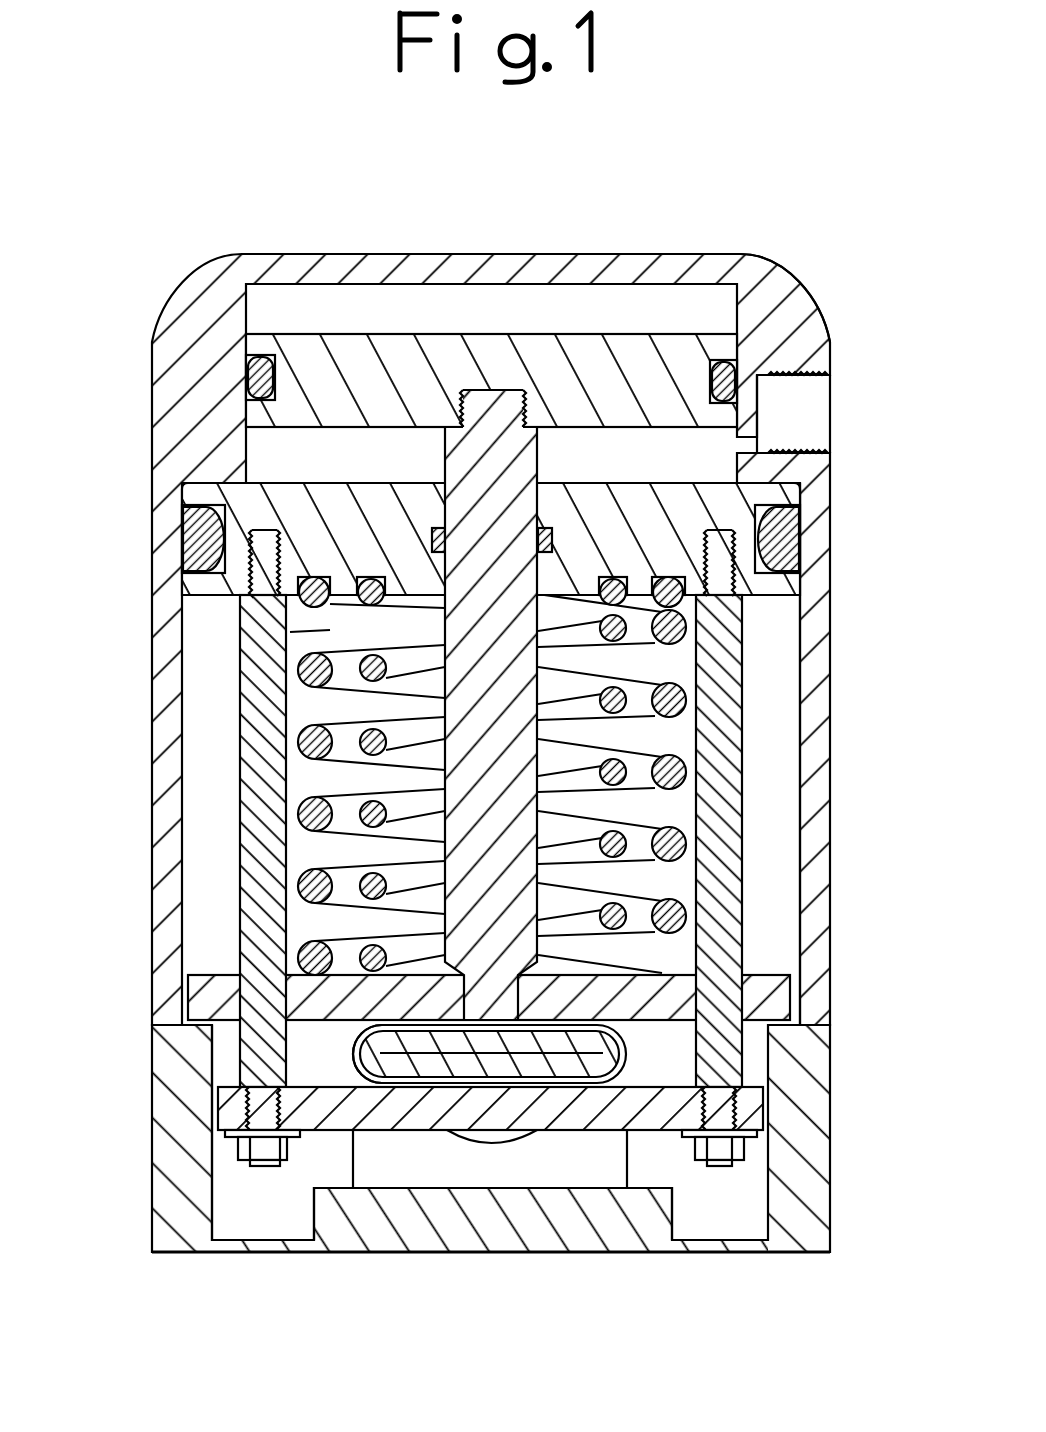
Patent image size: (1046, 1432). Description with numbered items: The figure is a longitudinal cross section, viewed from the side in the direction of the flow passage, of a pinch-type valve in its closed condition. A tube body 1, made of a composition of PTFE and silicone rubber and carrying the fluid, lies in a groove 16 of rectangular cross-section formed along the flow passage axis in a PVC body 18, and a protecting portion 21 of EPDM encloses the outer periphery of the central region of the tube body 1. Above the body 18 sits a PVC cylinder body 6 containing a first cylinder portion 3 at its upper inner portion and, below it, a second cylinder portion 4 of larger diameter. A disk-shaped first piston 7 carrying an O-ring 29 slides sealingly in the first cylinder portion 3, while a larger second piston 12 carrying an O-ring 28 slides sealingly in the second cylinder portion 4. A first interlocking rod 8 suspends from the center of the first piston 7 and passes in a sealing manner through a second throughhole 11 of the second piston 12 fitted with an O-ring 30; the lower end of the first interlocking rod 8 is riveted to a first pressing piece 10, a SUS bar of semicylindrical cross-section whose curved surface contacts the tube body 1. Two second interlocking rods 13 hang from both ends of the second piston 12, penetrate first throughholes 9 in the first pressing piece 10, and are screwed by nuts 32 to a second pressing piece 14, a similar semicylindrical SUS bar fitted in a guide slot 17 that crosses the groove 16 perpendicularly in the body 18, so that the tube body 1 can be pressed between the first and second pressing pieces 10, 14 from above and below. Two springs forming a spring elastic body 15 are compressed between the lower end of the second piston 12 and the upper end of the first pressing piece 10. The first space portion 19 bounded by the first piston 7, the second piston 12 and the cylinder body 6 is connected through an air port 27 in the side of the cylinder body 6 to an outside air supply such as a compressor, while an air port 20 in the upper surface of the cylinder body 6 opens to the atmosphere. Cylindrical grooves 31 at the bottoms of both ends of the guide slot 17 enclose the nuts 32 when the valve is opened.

The tube body 1 is at (415, 1037).
The first cylinder portion 3 is at (796, 346).
The second cylinder portion 4 is at (808, 642).
The cylinder body 6 is at (788, 290).
The first piston 7 is at (328, 362).
The first interlocking rod 8 is at (513, 498).
The first throughholes 9 is at (747, 972).
The first pressing piece 10 is at (360, 992).
The second throughhole 11 is at (448, 623).
The second piston 12 is at (345, 505).
The second interlocking rods 13 is at (243, 742).
The second pressing piece 14 is at (556, 1110).
The spring elastic body 15 is at (300, 657).
The groove 16 is at (447, 1160).
The guide slot 17 is at (320, 1163).
The body 18 is at (792, 1160).
The first space portion 19 is at (312, 438).
The air port 20 is at (490, 270).
The protecting portion 21 is at (626, 1030).
The air port 27 is at (788, 418).
The O-ring 28 is at (203, 541).
The O-ring 29 is at (717, 360).
The O-ring 30 is at (553, 538).
The cylindrical grooves 31 is at (268, 1212).
The nuts 32 is at (721, 1148).